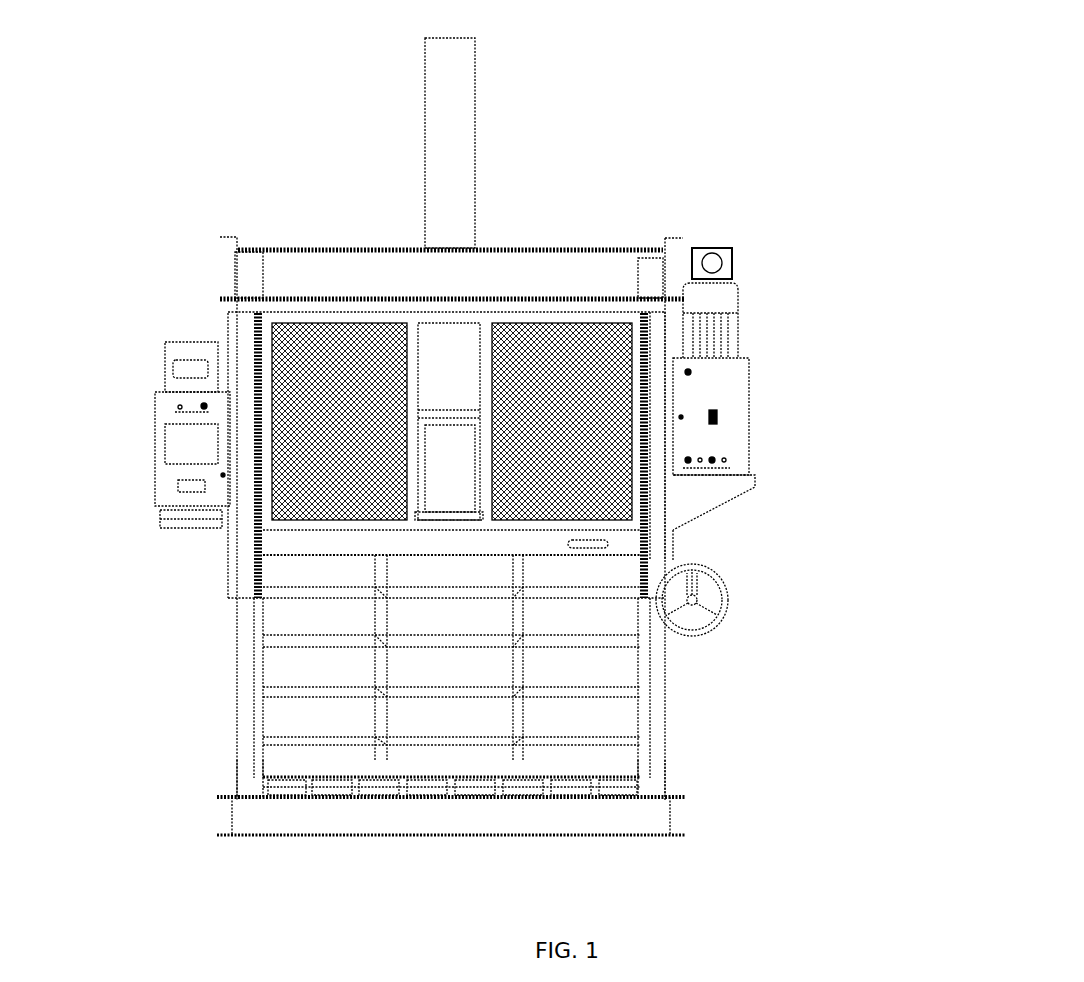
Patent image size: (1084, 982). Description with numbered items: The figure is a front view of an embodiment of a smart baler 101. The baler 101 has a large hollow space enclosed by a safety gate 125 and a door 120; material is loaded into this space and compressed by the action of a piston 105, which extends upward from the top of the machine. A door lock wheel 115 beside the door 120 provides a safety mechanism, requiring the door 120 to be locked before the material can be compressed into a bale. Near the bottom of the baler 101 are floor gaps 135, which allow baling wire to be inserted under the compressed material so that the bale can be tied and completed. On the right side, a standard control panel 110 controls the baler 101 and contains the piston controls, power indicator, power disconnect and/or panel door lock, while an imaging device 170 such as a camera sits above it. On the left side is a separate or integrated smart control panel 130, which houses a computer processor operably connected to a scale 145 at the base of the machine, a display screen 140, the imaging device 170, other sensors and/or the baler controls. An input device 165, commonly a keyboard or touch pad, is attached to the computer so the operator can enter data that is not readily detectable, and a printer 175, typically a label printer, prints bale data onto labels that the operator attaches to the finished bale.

The baler 101 is at (745, 122).
The piston 105 is at (493, 103).
The standard control panel 110 is at (755, 425).
The door lock wheel 115 is at (722, 640).
The door 120 is at (620, 717).
The safety gate 125 is at (328, 367).
The smart control panel 130 is at (140, 455).
The floor gaps 135 is at (280, 787).
The display screen 140 is at (183, 452).
The scale 145 is at (640, 818).
The input device 165 is at (183, 532).
The imaging device 170 is at (740, 262).
The printer 175 is at (177, 323).